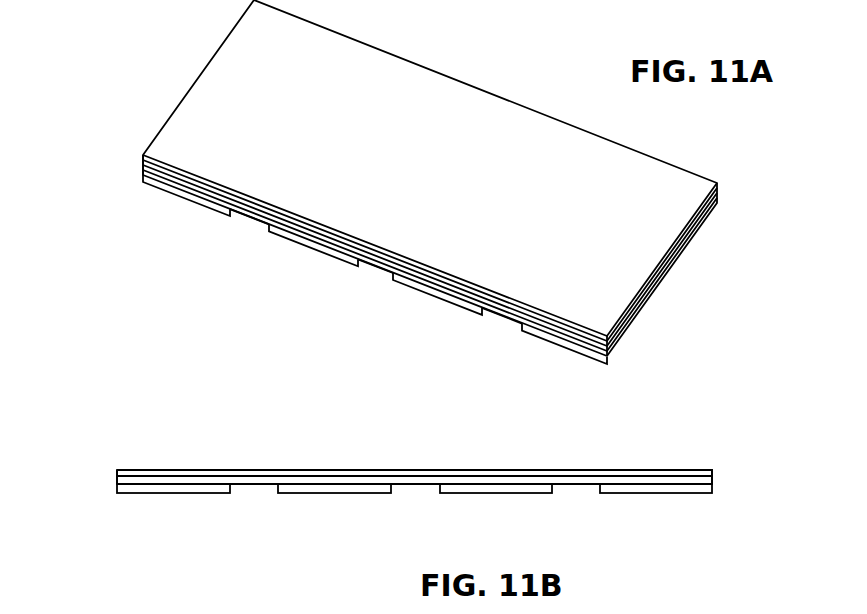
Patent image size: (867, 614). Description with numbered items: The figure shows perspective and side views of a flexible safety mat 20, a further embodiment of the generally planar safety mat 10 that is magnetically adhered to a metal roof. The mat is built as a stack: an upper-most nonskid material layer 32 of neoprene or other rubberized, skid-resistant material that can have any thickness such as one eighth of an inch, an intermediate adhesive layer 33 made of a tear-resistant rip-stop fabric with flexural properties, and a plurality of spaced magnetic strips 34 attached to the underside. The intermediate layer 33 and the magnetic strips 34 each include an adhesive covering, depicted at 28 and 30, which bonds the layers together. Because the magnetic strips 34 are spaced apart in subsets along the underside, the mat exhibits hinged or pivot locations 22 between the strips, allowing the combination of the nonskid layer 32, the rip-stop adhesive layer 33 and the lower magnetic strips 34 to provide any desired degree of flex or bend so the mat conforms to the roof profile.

In FIG. 11A, the safety mat 10 is at (493, 82).
In FIG. 11B, the safety mat 20 is at (198, 455).
In FIG. 11A, the hinged or pivot locations 22 is at (253, 210).
In FIG. 11B, the adhesive covering 28 is at (640, 484).
In FIG. 11B, the adhesive covering 30 is at (697, 475).
In FIG. 11A, the nonskid material layer 32 is at (215, 88).
In FIG. 11B, the nonskid material layer 32 is at (155, 470).
In FIG. 11A, the intermediate adhesive layer 33 is at (142, 165).
In FIG. 11B, the intermediate adhesive layer 33 is at (117, 483).
In FIG. 11A, the magnetic strips 34 is at (183, 194).
In FIG. 11B, the magnetic strips 34 is at (187, 494).